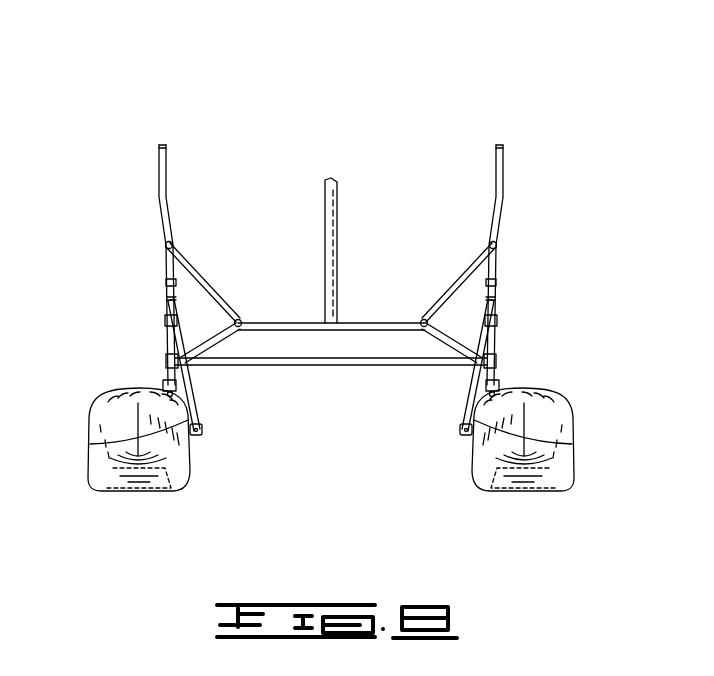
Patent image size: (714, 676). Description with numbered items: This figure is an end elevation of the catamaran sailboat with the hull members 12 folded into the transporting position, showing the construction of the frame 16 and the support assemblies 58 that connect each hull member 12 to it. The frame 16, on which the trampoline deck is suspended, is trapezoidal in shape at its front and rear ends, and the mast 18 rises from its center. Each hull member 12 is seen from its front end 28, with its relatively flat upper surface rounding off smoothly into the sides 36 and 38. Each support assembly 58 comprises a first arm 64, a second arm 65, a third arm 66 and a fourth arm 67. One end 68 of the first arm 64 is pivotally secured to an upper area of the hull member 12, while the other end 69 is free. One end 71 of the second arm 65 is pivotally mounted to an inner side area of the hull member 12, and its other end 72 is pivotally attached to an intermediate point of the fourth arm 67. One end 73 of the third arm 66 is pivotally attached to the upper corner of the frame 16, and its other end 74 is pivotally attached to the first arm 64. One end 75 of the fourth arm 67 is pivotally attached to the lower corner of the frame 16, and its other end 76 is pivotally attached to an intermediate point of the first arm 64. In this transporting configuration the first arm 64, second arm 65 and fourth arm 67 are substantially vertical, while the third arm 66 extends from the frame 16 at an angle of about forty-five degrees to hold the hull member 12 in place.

The hull member 12 is at (332, 439).
The frame 16 is at (348, 324).
The mast 18 is at (323, 197).
The front end 28 is at (90, 444).
The side 36 is at (93, 413).
The side 38 is at (192, 462).
The support assembly 58 is at (332, 387).
The first arm 64 is at (158, 166).
The second arm 65 is at (186, 396).
The third arm 66 is at (207, 282).
The fourth arm 67 is at (167, 297).
The end of first arm 68 is at (163, 386).
The other end of first arm 69 is at (162, 144).
The end of second arm 71 is at (202, 431).
The other end of second arm 72 is at (167, 322).
The end of third arm 73 is at (241, 317).
The other end of third arm 74 is at (165, 245).
The end of fourth arm 75 is at (167, 360).
The other end of fourth arm 76 is at (166, 283).